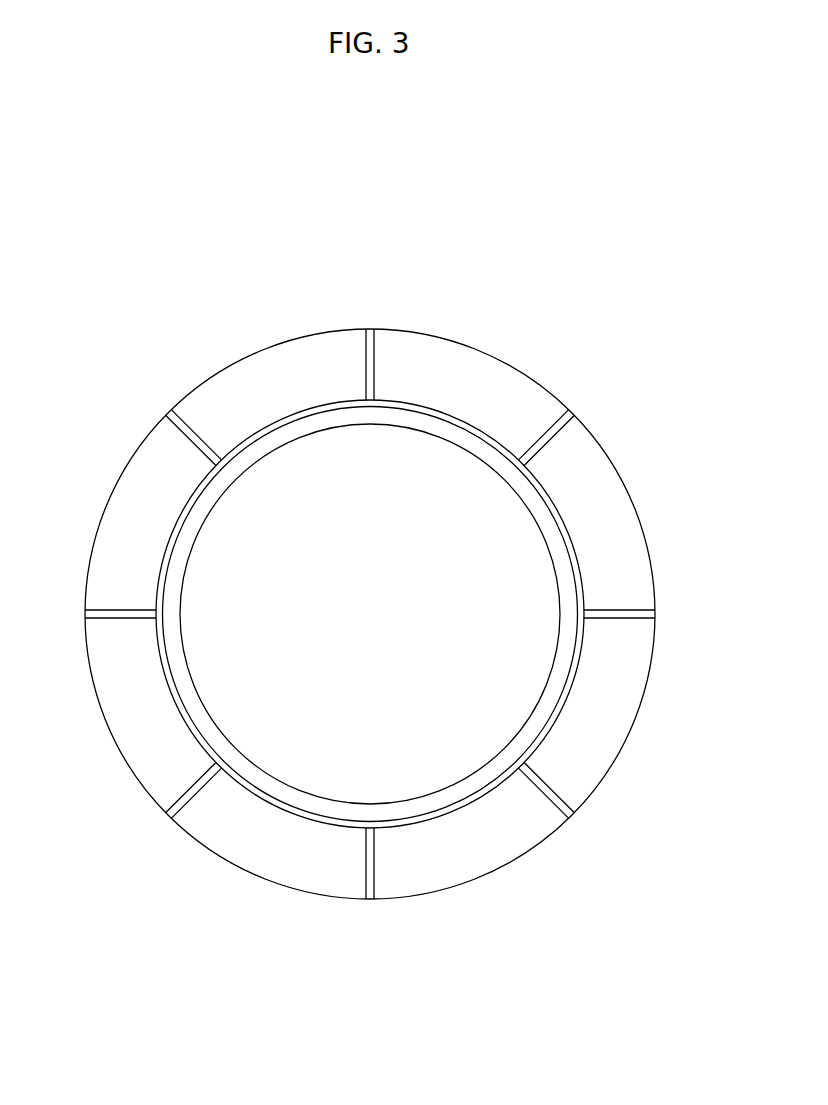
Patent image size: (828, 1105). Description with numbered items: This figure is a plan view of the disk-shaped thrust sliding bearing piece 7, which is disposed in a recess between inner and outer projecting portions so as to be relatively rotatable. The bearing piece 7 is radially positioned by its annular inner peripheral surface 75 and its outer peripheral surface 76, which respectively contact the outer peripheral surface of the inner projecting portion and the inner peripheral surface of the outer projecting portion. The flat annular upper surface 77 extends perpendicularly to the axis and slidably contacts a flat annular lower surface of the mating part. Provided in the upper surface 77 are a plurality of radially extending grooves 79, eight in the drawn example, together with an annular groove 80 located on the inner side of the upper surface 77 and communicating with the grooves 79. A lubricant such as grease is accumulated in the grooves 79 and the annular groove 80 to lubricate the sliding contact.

The thrust sliding bearing piece 7 is at (369, 611).
The annular inner peripheral surface 75 is at (189, 673).
The outer peripheral surface 76 is at (645, 535).
The upper surface 77 is at (369, 611).
The radially extending grooves 79 is at (372, 366).
The annular groove 80 is at (478, 796).